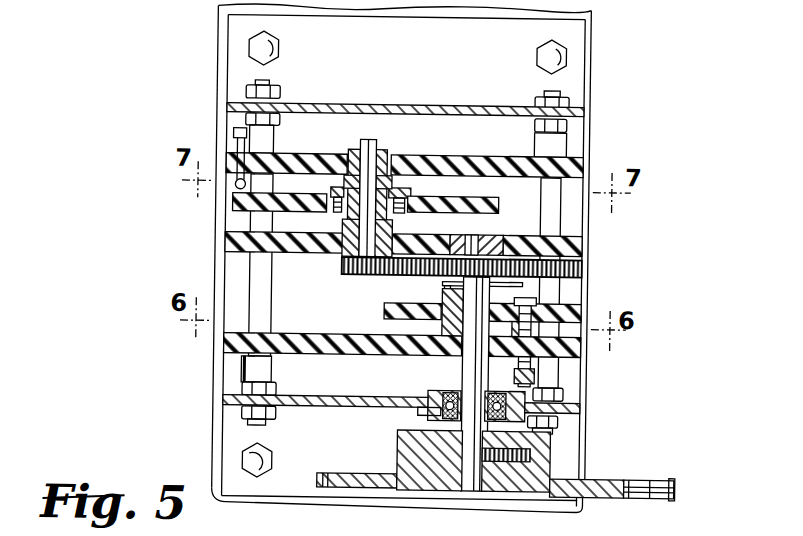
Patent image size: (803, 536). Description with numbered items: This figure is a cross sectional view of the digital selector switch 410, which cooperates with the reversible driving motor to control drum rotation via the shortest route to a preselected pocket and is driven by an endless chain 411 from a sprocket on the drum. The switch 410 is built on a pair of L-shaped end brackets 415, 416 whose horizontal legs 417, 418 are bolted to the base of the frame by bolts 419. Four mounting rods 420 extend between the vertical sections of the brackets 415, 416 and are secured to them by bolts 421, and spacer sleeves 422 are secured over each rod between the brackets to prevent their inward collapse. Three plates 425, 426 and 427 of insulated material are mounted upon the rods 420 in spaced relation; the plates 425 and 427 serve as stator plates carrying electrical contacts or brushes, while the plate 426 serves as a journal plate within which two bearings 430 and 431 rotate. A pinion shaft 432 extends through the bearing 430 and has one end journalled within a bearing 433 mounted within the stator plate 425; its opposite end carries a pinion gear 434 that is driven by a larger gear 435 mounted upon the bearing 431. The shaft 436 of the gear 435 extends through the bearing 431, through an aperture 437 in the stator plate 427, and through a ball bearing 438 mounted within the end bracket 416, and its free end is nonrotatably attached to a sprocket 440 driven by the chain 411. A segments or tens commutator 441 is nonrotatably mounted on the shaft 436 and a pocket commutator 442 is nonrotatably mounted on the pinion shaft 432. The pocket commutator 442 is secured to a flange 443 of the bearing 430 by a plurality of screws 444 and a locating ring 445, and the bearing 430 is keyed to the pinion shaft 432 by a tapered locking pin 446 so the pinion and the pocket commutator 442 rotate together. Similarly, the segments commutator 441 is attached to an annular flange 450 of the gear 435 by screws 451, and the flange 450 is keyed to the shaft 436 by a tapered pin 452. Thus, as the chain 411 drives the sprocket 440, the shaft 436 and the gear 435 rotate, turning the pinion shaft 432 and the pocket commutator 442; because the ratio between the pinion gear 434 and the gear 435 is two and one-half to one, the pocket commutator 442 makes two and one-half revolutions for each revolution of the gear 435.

The digital selector switch 410 is at (655, 92).
The endless chain 411 is at (639, 489).
The L-shaped end bracket 415 is at (479, 98).
The L-shaped end bracket 416 is at (338, 410).
The horizontal leg 417 is at (400, 52).
The horizontal leg 418 is at (355, 469).
The bolt 419 is at (271, 47).
The mounting rod 420 is at (264, 84).
The bolt 421 is at (279, 92).
The spacer sleeve 422 is at (400, 254).
The stator plate 425 is at (486, 165).
The journal plate 426 is at (296, 255).
The stator plate 427 is at (324, 349).
The bearing 430 is at (387, 232).
The bearing 431 is at (505, 244).
The pinion shaft 432 is at (358, 274).
The bearing 433 is at (377, 160).
The pinion gear 434 is at (340, 268).
The gear 435 is at (575, 268).
The shaft 436 is at (467, 359).
The aperture 437 is at (432, 346).
The ball bearing 438 is at (444, 405).
The sprocket 440 is at (481, 483).
The segments commutator 441 is at (383, 313).
The pocket commutator 442 is at (228, 208).
The flange 443 is at (401, 196).
The screw 444 is at (416, 166).
The locating ring 445 is at (330, 212).
The tapered locking pin 446 is at (363, 200).
The annular flange 450 is at (441, 284).
The screw 451 is at (445, 294).
The tapered pin 452 is at (567, 337).